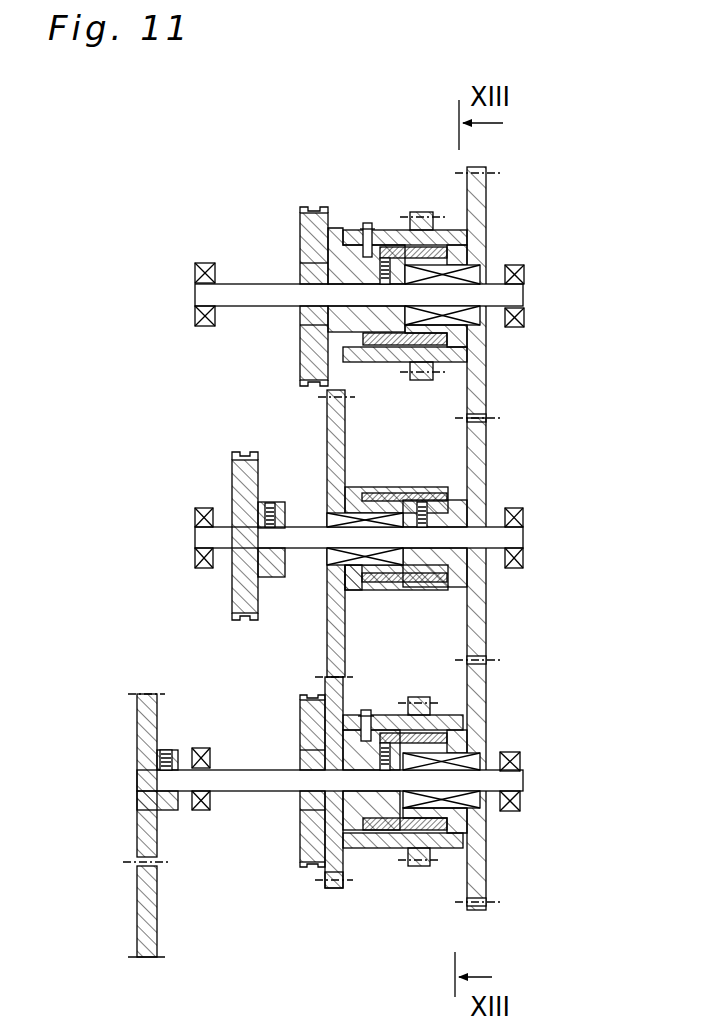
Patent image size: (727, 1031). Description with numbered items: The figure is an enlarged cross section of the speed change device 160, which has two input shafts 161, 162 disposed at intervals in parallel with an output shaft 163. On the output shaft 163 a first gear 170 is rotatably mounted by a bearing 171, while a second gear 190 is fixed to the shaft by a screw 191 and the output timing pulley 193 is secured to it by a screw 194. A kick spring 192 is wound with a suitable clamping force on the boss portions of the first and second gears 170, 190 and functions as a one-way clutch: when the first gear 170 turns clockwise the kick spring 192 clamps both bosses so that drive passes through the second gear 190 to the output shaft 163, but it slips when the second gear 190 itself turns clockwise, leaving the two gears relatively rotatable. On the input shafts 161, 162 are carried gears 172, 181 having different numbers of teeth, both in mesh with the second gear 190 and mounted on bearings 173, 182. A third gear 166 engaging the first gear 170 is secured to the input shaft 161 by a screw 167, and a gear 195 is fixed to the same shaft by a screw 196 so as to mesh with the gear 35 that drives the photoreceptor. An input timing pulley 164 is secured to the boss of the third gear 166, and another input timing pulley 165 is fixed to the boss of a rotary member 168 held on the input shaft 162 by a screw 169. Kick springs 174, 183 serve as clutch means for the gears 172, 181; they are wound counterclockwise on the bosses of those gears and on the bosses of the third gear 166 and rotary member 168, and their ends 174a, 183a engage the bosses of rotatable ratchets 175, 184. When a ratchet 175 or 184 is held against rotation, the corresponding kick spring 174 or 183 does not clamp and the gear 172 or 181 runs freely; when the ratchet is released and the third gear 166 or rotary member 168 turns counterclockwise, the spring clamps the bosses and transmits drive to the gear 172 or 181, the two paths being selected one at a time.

The gear 35 is at (136, 937).
The speed change device 160 is at (346, 530).
The input shaft 161 is at (258, 768).
The input shaft 162 is at (243, 284).
The output shaft 163 is at (305, 535).
The input timing pulley 164 is at (302, 832).
The input timing pulley 165 is at (302, 227).
The third gear 166 is at (332, 890).
The screw 167 is at (388, 762).
The rotary member 168 is at (342, 250).
The screw 169 is at (367, 225).
The first gear 170 is at (337, 622).
The bearing 171 is at (340, 565).
The gear 172 is at (486, 883).
The bearing 173 is at (468, 746).
The kick spring 174 is at (447, 722).
The end of kick spring 174a is at (363, 710).
The ratchet 175 is at (418, 697).
The gear 181 is at (487, 203).
The bearing 182 is at (455, 336).
The kick spring 183 is at (435, 243).
The end of kick spring 183a is at (377, 272).
The ratchet 184 is at (422, 212).
The second gear 190 is at (485, 460).
The screw 191 is at (480, 502).
The kick spring 192 is at (410, 495).
The output timing pulley 193 is at (236, 484).
The screw 194 is at (270, 502).
The gear 195 is at (136, 731).
The screw 196 is at (164, 750).